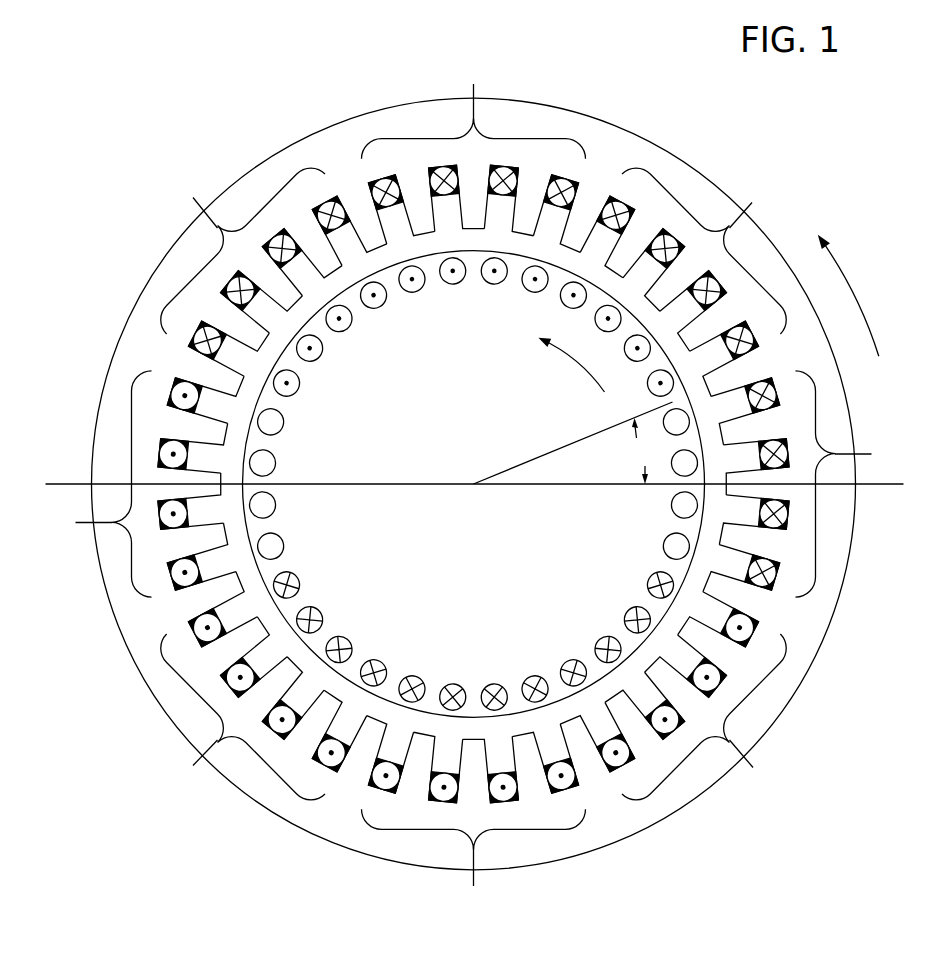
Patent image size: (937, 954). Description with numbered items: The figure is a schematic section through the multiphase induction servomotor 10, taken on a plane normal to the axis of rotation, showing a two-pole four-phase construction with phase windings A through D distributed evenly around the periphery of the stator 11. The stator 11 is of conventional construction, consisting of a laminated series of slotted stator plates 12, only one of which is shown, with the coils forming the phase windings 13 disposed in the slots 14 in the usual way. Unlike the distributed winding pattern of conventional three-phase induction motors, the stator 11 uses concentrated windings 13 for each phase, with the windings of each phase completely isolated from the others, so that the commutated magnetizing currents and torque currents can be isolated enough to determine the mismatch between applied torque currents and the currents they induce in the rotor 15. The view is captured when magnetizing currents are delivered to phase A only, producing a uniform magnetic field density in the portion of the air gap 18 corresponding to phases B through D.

The multiphase induction servomotor 10 is at (470, 487).
The stator 11 is at (474, 466).
The slotted stator plates 12 is at (467, 485).
The phase windings 13 is at (473, 544).
The slots 14 is at (180, 386).
The rotor 15 is at (381, 484).
The air gap 18 is at (474, 479).